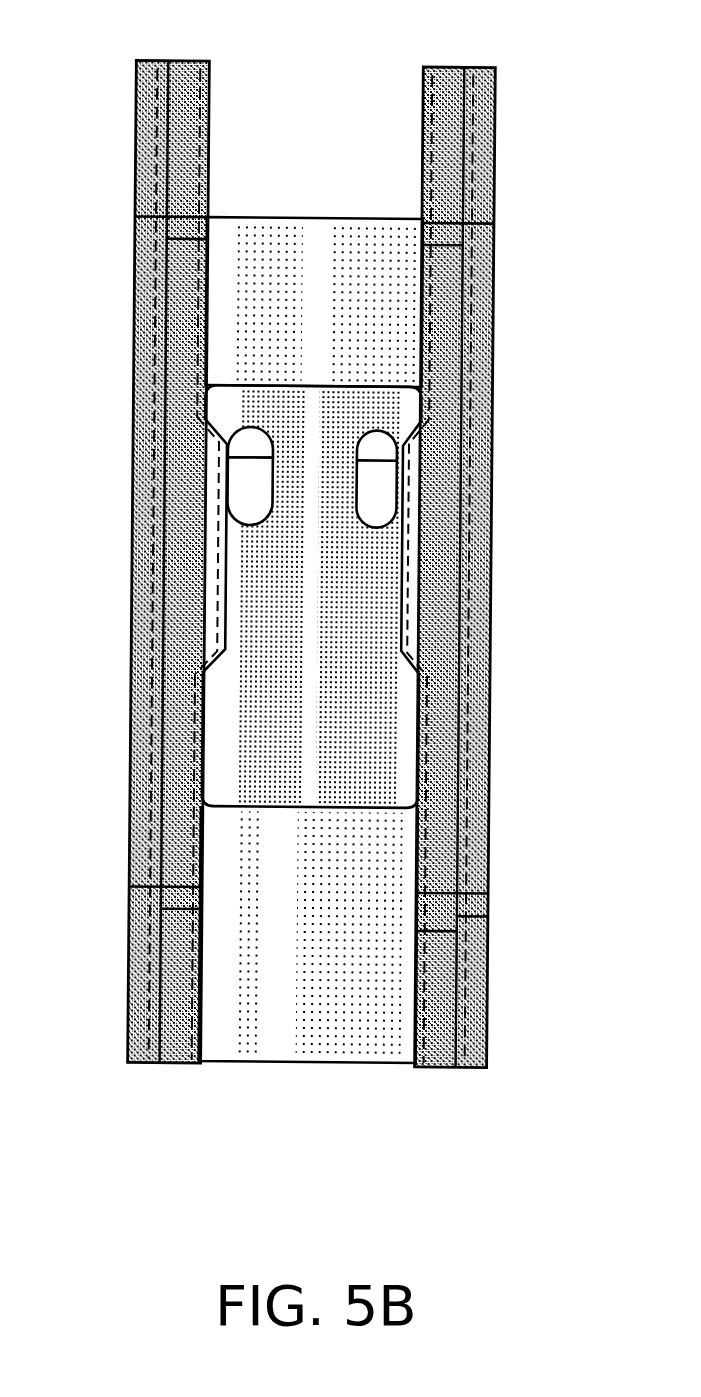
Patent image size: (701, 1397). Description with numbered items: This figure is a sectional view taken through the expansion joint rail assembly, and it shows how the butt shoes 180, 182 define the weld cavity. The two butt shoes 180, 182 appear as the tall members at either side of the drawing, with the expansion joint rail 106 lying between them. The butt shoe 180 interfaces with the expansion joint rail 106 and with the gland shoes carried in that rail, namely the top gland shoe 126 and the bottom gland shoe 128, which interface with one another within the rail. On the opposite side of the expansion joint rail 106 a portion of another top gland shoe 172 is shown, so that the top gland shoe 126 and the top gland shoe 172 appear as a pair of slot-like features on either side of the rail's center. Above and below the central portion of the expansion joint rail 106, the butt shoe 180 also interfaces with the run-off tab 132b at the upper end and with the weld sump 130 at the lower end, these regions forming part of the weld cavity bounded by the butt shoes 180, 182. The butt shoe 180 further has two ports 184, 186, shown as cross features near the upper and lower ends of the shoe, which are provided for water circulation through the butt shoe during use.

The butt shoe 180 is at (157, 60).
The butt shoe 182 is at (482, 66).
The port 184 is at (135, 228).
The port 186 is at (128, 895).
The run-off tab 132b is at (233, 222).
The expansion joint rail 106 is at (240, 780).
The weld sump 130 is at (228, 1042).
The top gland shoe 126 is at (242, 445).
The bottom gland shoe 128 is at (240, 497).
The top gland shoe 172 is at (380, 442).